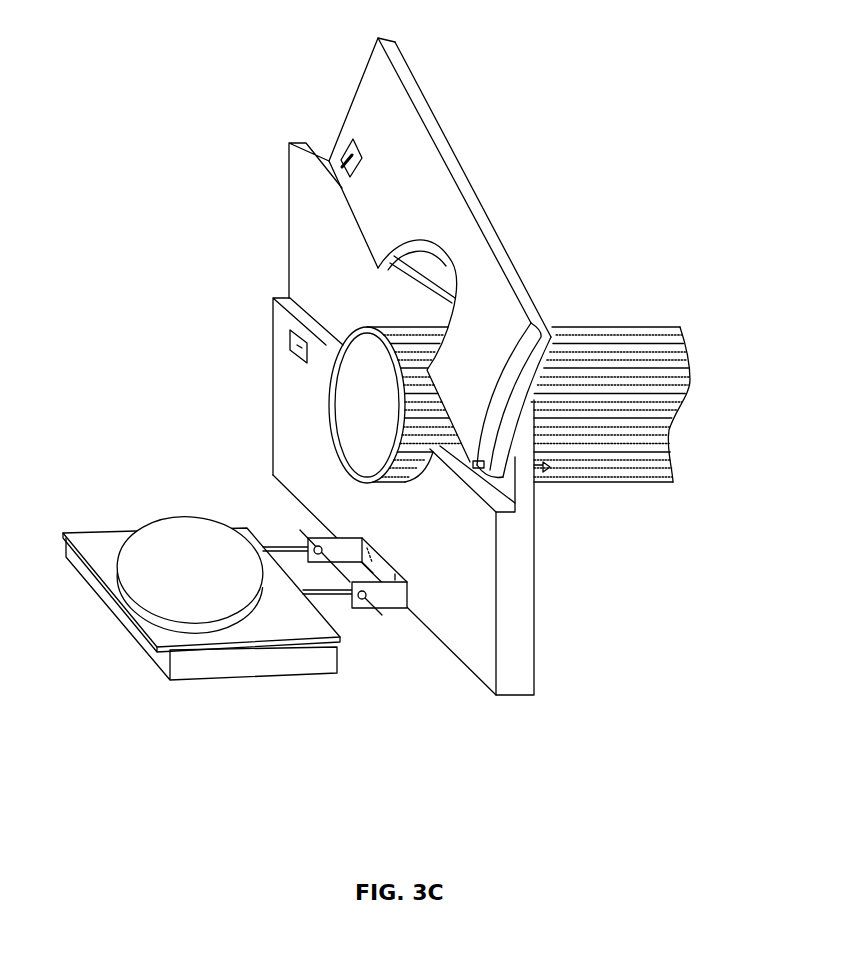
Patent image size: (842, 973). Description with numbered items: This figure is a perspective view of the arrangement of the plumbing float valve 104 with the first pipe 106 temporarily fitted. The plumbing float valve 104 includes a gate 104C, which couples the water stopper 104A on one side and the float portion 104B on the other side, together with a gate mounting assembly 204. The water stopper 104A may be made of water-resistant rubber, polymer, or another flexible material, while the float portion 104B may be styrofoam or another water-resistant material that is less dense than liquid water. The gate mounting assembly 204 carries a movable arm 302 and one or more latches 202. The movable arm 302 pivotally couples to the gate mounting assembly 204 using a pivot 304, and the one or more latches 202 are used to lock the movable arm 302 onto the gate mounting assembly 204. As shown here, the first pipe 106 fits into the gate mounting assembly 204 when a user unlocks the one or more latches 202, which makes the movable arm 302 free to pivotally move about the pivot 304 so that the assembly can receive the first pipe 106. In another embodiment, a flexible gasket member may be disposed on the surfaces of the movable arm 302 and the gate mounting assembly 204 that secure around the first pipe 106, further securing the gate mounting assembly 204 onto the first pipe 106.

The movable arm 302 is at (358, 89).
The latch 202 is at (332, 163).
The pivot 304 is at (477, 465).
The first pipe 106 is at (597, 482).
The gate mounting assembly 204 is at (533, 620).
The plumbing float valve 104 is at (220, 597).
The water stopper 104A is at (163, 512).
The float portion 104B is at (250, 680).
The gate 104C is at (78, 532).